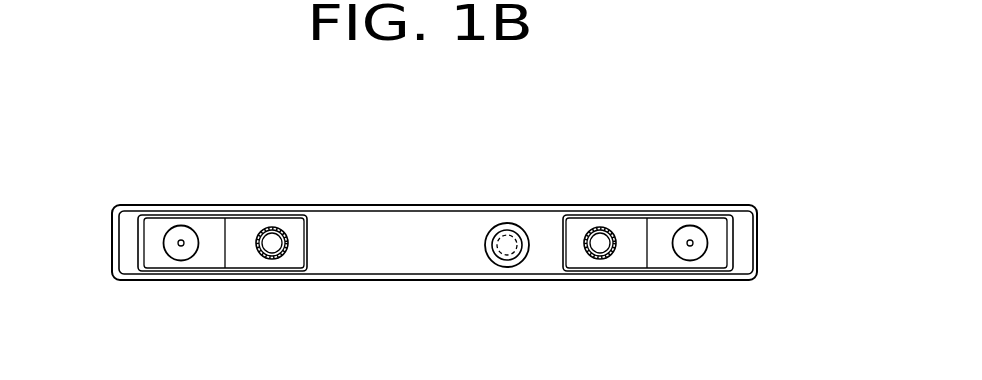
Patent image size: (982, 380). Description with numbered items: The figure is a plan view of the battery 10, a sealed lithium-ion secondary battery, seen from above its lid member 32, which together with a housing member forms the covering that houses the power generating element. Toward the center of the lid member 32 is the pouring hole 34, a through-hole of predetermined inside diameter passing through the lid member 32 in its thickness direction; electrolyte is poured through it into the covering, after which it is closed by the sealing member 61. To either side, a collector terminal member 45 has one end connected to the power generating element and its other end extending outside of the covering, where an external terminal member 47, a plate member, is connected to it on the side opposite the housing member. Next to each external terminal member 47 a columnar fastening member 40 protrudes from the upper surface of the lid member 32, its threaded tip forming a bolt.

The battery 10 is at (431, 191).
The lid member 32 is at (398, 230).
The pouring hole 34 is at (508, 250).
The fastening member 40 is at (273, 240).
The collector terminal member 45 is at (181, 232).
The external terminal member 47 is at (238, 230).
The sealing member 61 is at (503, 233).